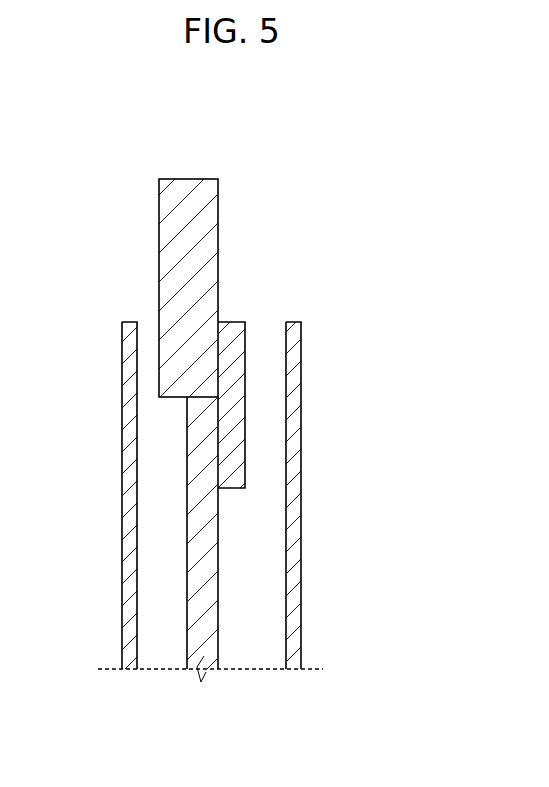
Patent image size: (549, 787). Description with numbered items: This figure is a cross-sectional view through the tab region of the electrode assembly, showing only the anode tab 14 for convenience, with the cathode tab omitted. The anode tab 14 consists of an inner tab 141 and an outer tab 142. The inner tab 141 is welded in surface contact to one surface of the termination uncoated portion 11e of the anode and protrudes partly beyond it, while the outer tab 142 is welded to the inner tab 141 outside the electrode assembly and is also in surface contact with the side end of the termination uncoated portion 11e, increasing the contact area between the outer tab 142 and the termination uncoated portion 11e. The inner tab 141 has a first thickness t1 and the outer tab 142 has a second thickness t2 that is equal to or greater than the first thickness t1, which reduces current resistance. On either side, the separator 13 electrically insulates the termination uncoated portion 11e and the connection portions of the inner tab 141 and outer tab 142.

The anode tab 14 is at (258, 333).
The inner tab 141 is at (235, 320).
The outer tab 142 is at (207, 277).
The termination uncoated portion 11e is at (207, 538).
The separator 13 is at (126, 553).
The first thickness t1 is at (162, 426).
The second thickness t2 is at (103, 228).